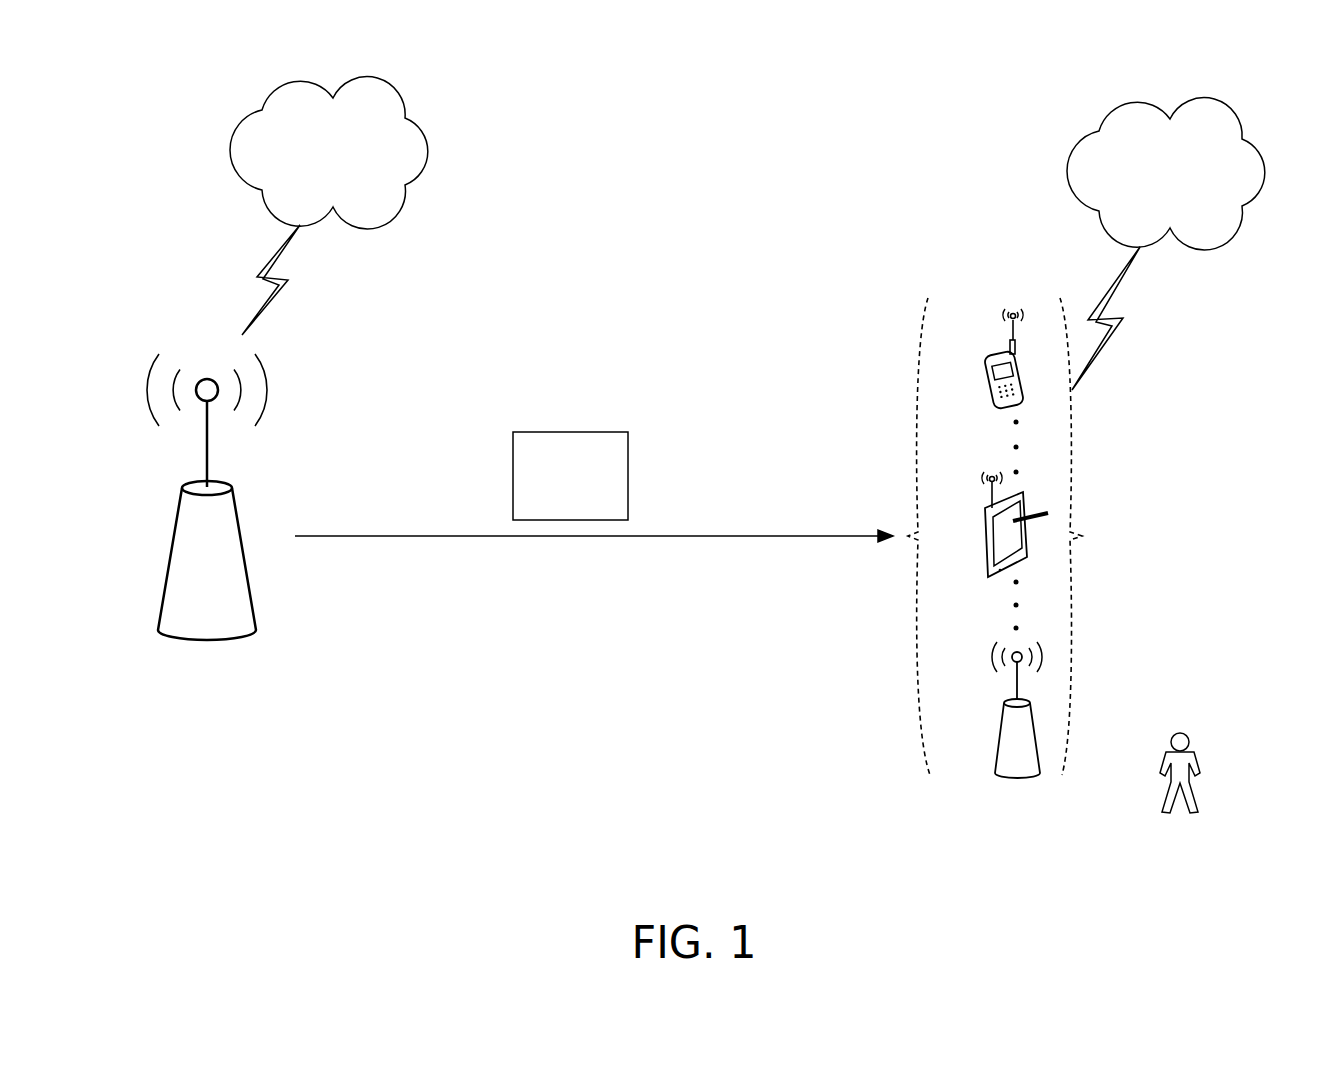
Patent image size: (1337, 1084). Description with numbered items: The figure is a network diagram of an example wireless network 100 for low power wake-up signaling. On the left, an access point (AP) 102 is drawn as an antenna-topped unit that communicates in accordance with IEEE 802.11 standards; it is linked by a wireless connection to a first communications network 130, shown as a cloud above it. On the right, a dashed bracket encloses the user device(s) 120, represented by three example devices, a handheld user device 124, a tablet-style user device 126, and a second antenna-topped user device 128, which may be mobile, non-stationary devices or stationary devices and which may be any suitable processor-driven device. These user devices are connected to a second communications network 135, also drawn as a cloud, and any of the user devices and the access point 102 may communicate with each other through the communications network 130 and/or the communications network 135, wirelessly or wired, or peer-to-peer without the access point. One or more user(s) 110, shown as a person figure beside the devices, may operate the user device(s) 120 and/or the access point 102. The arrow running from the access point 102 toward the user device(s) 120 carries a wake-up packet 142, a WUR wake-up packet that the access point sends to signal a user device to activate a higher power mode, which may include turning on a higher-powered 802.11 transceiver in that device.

The wireless network 100 is at (1282, 61).
The access point (AP) 102 is at (235, 749).
The user(s) 110 is at (1233, 844).
The user device(s) 120 is at (1167, 580).
The user device 124 is at (986, 362).
The user device 126 is at (985, 532).
The user device 128 is at (1000, 738).
The communications network 130 is at (352, 186).
The communications network 135 is at (1166, 244).
The WUR wake-up packet 142 is at (568, 432).